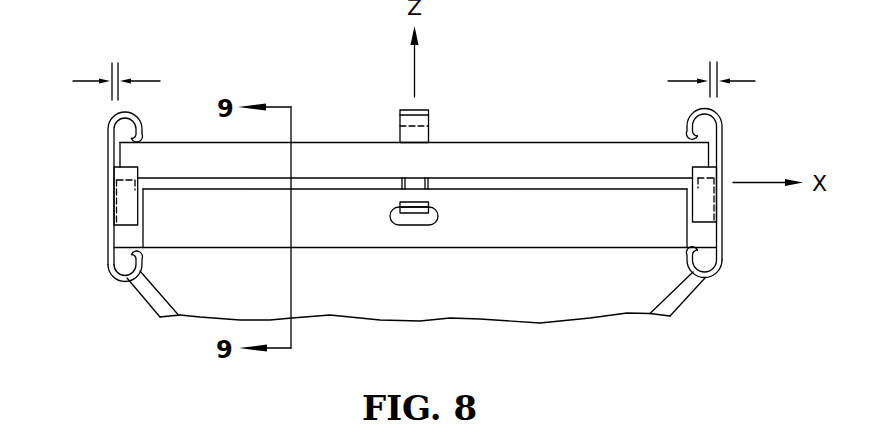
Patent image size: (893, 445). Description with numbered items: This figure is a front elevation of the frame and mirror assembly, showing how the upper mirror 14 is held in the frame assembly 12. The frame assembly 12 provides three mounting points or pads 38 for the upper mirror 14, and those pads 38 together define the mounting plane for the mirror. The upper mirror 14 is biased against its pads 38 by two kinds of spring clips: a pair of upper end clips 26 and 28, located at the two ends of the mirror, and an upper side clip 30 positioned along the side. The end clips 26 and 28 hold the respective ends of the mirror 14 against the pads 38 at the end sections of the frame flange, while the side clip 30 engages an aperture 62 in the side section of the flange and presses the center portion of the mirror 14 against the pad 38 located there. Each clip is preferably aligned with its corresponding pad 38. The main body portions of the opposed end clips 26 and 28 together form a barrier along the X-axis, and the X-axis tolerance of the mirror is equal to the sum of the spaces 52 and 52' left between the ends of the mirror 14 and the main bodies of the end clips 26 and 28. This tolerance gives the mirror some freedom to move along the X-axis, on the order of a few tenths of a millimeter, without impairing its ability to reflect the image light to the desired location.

The frame assembly 12 is at (553, 325).
The upper mirror 14 is at (562, 142).
The upper end clip 26 is at (109, 228).
The upper end clip 28 is at (722, 223).
The upper side clip 30 is at (427, 109).
The mounting points or pads 38 is at (402, 181).
The space 52 is at (96, 70).
The space 52' is at (739, 68).
The aperture 62 is at (430, 226).